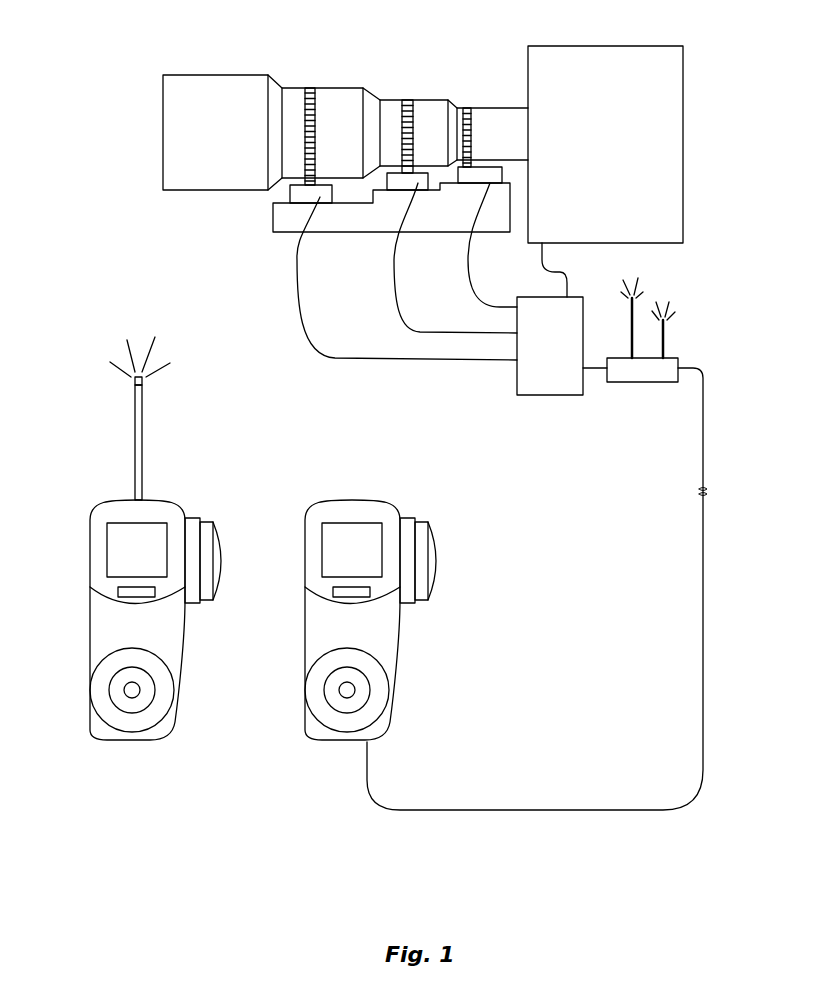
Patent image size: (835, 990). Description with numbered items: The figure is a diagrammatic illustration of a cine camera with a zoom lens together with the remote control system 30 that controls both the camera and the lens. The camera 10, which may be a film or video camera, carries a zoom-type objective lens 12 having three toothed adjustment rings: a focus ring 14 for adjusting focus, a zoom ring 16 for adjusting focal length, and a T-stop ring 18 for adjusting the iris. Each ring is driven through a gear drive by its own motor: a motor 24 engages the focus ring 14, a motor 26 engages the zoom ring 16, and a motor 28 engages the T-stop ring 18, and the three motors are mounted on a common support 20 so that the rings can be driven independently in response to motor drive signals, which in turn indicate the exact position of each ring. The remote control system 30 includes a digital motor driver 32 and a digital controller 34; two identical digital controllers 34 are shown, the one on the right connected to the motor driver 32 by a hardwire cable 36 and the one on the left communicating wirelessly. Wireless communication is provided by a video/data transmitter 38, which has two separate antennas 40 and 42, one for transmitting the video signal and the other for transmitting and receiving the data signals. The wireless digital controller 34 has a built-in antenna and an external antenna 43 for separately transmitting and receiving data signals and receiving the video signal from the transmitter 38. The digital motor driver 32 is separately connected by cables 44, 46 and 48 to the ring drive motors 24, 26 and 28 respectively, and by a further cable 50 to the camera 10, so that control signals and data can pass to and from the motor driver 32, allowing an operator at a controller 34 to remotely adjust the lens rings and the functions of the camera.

The camera 10 is at (605, 144).
The zoom-type objective lens 12 is at (342, 70).
The focus ring 14 is at (313, 87).
The zoom ring 16 is at (403, 100).
The T-stop ring 18 is at (467, 107).
The support 20 is at (273, 224).
The motor 24 is at (295, 195).
The motor 26 is at (393, 185).
The motor 28 is at (470, 185).
The remote control system 30 is at (669, 353).
The digital motor driver 32 is at (548, 396).
The digital controller 34 is at (243, 538).
The cable 36 is at (703, 562).
The video/data transmitter 38 is at (647, 383).
The antenna 40 is at (632, 327).
The antenna 42 is at (665, 337).
The external antenna 43 is at (143, 441).
The cable 44 is at (298, 310).
The cable 46 is at (400, 311).
The cable 48 is at (470, 285).
The cable 50 is at (540, 268).